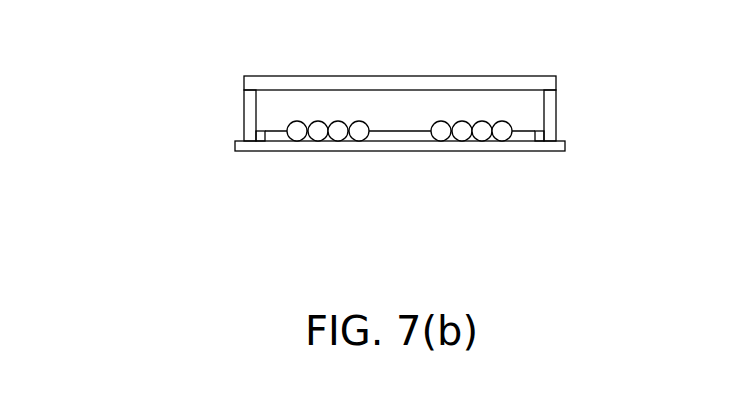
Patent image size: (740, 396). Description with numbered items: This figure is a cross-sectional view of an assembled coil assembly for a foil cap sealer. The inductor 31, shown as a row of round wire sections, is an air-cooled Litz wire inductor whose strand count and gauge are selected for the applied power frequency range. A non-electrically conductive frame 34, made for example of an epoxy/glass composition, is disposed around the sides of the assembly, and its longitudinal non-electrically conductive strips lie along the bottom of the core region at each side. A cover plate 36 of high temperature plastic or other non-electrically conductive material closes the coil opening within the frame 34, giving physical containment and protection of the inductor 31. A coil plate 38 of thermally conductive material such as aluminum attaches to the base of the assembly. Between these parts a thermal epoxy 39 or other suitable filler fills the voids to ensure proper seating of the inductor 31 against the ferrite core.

The inductor 31 is at (481, 132).
The non-electrically conductive frame 34 is at (252, 114).
The cover plate 36 is at (535, 82).
The coil plate 38 is at (240, 148).
The thermal epoxy 39 is at (400, 134).